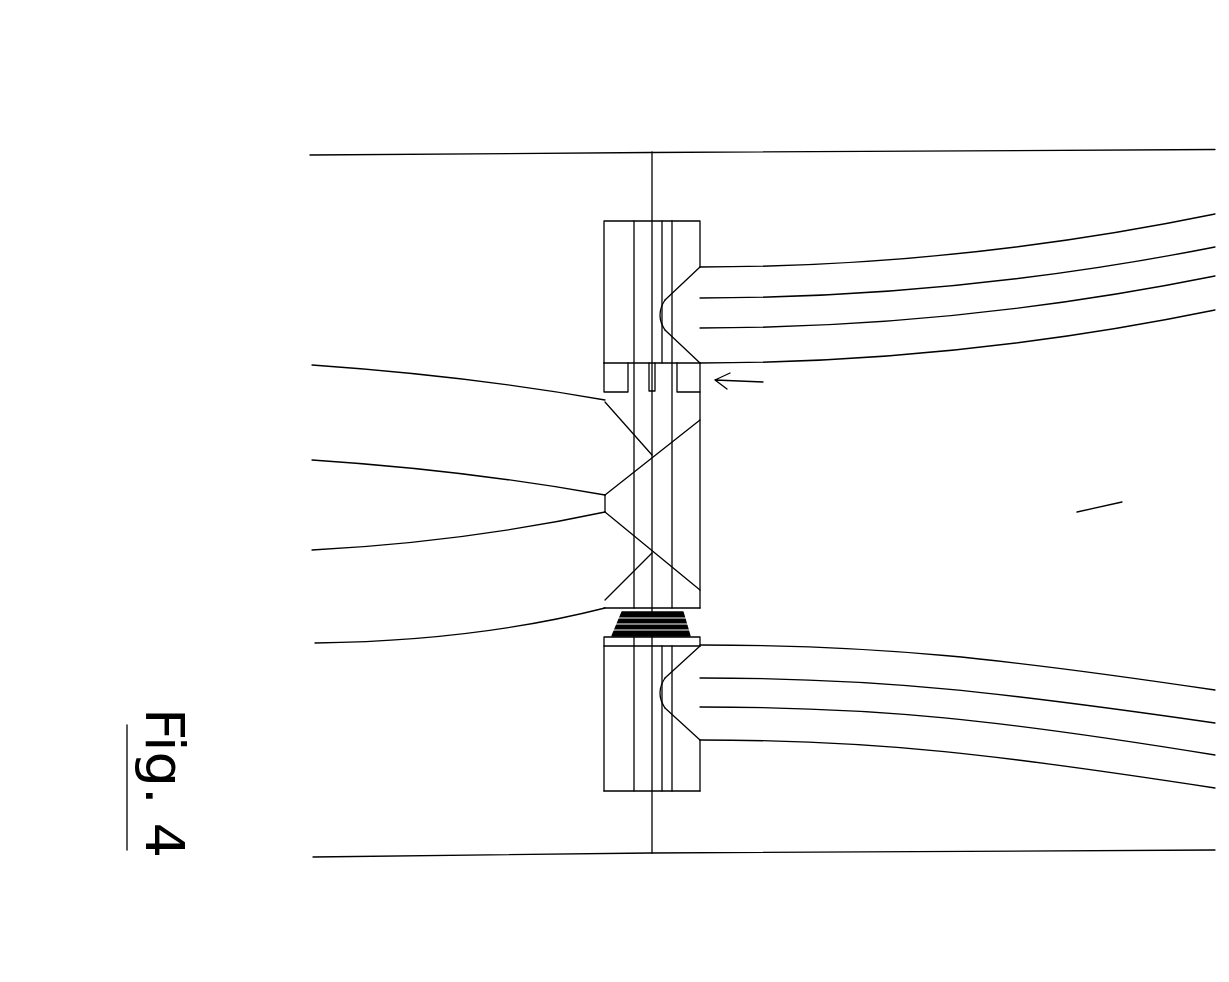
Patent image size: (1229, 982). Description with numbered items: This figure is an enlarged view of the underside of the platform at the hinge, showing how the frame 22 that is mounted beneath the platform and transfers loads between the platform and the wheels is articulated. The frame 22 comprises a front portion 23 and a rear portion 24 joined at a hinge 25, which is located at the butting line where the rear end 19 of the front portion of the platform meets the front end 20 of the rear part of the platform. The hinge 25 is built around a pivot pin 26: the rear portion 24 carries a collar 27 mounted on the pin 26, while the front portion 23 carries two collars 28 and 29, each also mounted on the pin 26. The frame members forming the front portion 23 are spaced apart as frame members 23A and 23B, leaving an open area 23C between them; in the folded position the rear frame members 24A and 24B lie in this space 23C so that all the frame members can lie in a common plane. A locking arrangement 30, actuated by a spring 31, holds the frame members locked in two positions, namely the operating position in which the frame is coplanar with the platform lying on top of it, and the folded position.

The rear end 19 is at (660, 172).
The front end 20 is at (650, 192).
The frame 22 is at (823, 287).
The front portion of the frame 23 is at (960, 332).
The frame member 23A is at (970, 272).
The frame member 23B is at (967, 675).
The open area 23C is at (1093, 487).
The rear portion of the frame 24 is at (420, 390).
The rear frame member 24A is at (333, 380).
The rear frame member 24B is at (362, 610).
The hinge 25 is at (665, 220).
The pivot pin 26 is at (665, 398).
The collar 27 is at (703, 500).
The collar 28 is at (700, 248).
The collar 29 is at (690, 647).
The locking arrangement 30 is at (771, 380).
The spring 31 is at (617, 623).